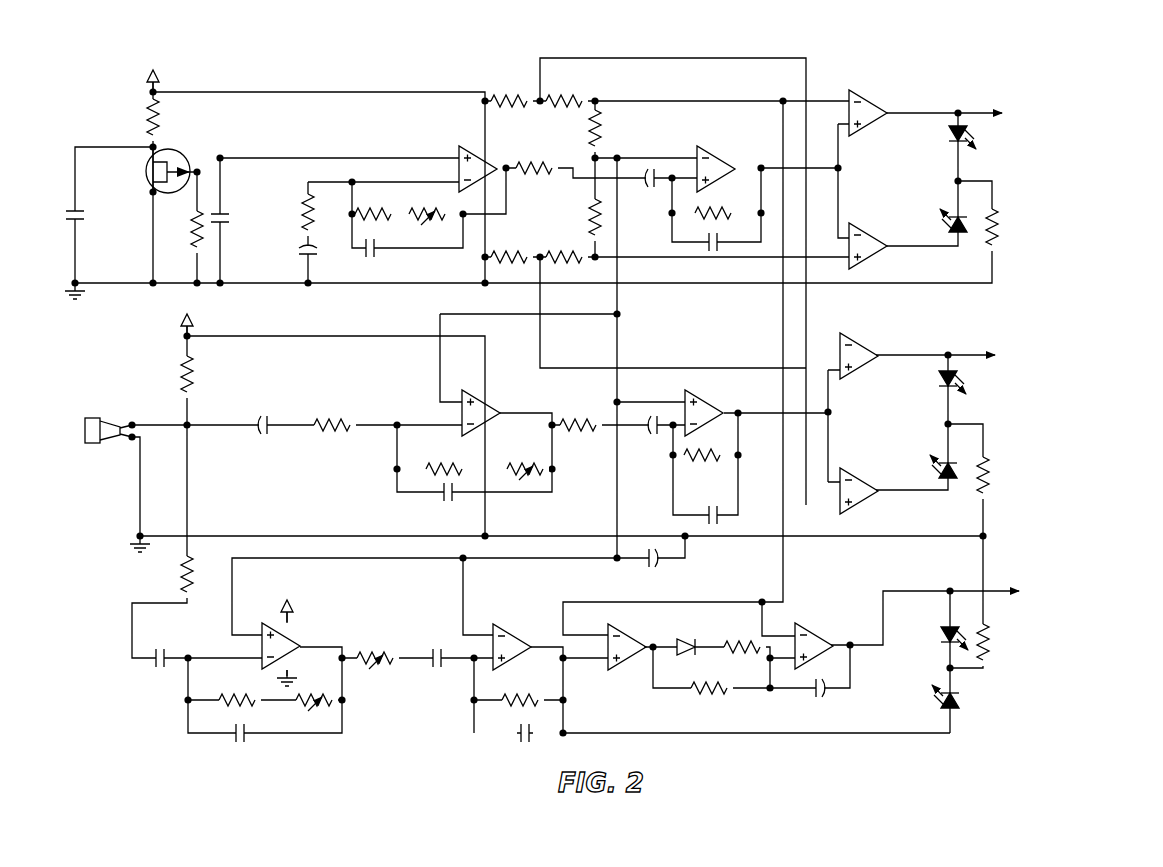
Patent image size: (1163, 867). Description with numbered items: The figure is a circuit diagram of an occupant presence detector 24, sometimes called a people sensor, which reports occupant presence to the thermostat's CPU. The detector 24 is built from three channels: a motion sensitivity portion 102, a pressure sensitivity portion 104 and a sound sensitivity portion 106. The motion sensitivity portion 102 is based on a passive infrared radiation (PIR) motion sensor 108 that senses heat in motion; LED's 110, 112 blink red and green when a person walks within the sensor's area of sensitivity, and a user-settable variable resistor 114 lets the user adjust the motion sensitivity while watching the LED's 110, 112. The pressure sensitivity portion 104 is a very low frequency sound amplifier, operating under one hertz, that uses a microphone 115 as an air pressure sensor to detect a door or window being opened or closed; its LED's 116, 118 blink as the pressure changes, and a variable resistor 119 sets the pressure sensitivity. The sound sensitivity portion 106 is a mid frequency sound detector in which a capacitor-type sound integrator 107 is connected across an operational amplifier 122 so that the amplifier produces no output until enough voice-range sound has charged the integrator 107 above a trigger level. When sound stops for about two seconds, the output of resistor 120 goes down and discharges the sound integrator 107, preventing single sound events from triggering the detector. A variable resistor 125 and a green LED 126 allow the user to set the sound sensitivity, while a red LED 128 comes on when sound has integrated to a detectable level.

The occupant presence detector 24 is at (583, 415).
The motion sensitivity portion 102 is at (1003, 143).
The pressure sensitivity portion 104 is at (998, 403).
The sound sensitivity portion 106 is at (1000, 613).
The capacitor-type sound integrator 107 is at (825, 702).
The passive infrared radiation (PIR) motion sensor 108 is at (150, 157).
The LED 110 is at (972, 131).
The LED 112 is at (968, 224).
The variable resistor 114 is at (428, 204).
The microphone 115 is at (110, 444).
The LED 116 is at (962, 378).
The LED 118 is at (955, 482).
The variable resistor 119 is at (525, 474).
The resistor 120 is at (712, 700).
The operational amplifier 122 is at (803, 626).
The variable resistor 125 is at (312, 712).
The green LED 126 is at (962, 705).
The red LED 128 is at (962, 630).